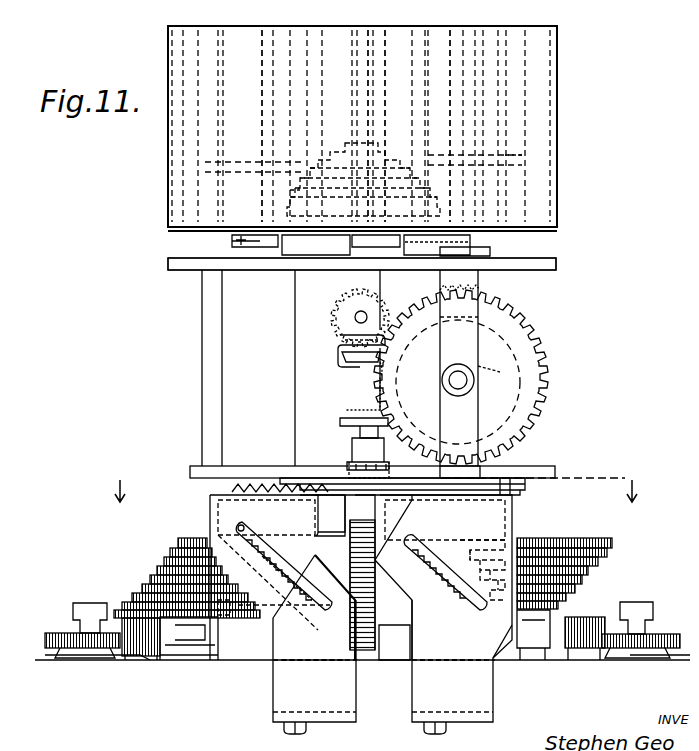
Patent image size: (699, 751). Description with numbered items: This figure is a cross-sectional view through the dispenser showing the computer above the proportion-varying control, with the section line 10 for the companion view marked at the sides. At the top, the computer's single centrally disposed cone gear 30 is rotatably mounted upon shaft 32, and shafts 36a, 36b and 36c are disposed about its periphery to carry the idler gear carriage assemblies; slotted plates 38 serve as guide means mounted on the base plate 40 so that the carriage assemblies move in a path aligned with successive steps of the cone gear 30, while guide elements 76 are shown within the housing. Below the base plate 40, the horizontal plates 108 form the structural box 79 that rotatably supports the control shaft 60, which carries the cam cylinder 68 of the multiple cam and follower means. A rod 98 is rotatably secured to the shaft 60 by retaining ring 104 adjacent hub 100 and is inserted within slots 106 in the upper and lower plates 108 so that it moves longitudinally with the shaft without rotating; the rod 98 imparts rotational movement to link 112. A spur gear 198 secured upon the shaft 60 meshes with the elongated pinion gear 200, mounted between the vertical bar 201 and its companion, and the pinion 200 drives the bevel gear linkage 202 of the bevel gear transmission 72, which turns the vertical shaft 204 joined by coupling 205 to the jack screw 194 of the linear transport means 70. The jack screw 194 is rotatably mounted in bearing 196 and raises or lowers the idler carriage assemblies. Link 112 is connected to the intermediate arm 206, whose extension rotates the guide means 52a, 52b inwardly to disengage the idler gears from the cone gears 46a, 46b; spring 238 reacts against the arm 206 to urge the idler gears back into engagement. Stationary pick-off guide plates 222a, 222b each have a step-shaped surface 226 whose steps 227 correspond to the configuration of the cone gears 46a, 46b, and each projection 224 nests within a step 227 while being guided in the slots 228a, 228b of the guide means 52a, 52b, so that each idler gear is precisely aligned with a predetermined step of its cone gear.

The section line 10 is at (690, 474).
The cone gear 30 is at (344, 150).
The shaft 32 is at (398, 111).
The shaft 36a is at (268, 36).
The shaft 36b is at (462, 38).
The shaft 36c is at (367, 36).
The slotted plate 38 is at (333, 40).
The base plate 40 is at (556, 232).
The cone gear 46a is at (175, 552).
The cone gear 46b is at (565, 566).
The guide means 52a is at (282, 698).
The guide means 52b is at (490, 700).
The control shaft 60 is at (452, 386).
The cam cylinder 68 is at (520, 400).
The linear transport means 70 is at (347, 546).
The bevel gear transmission 72 is at (367, 371).
The guide 76 is at (298, 192).
The structural box 79 is at (554, 252).
The rod 98 is at (478, 286).
The hub 100 is at (470, 394).
The retaining ring 104 is at (474, 376).
The slot 106 is at (436, 280).
The horizontal plate 108 is at (552, 272).
The link 112 is at (525, 466).
The jack screw 194 is at (375, 590).
The bearing 196 is at (374, 652).
The spur gear 198 is at (545, 338).
The elongated pinion gear 200 is at (336, 312).
The frame column 201 is at (305, 392).
The bevel gear linkage 202 is at (338, 346).
The vertical shaft 204 is at (356, 430).
The coupling 205 is at (352, 454).
The intermediate arm 206 is at (525, 488).
The pick-off guide plate 222a is at (234, 655).
The pick-off guide plate 222b is at (499, 660).
The projection 224 is at (252, 528).
The step-shaped surface 226 is at (306, 600).
The step 227 is at (286, 580).
The slot 228a is at (262, 558).
The slot 228b is at (440, 560).
The spring 238 is at (257, 488).